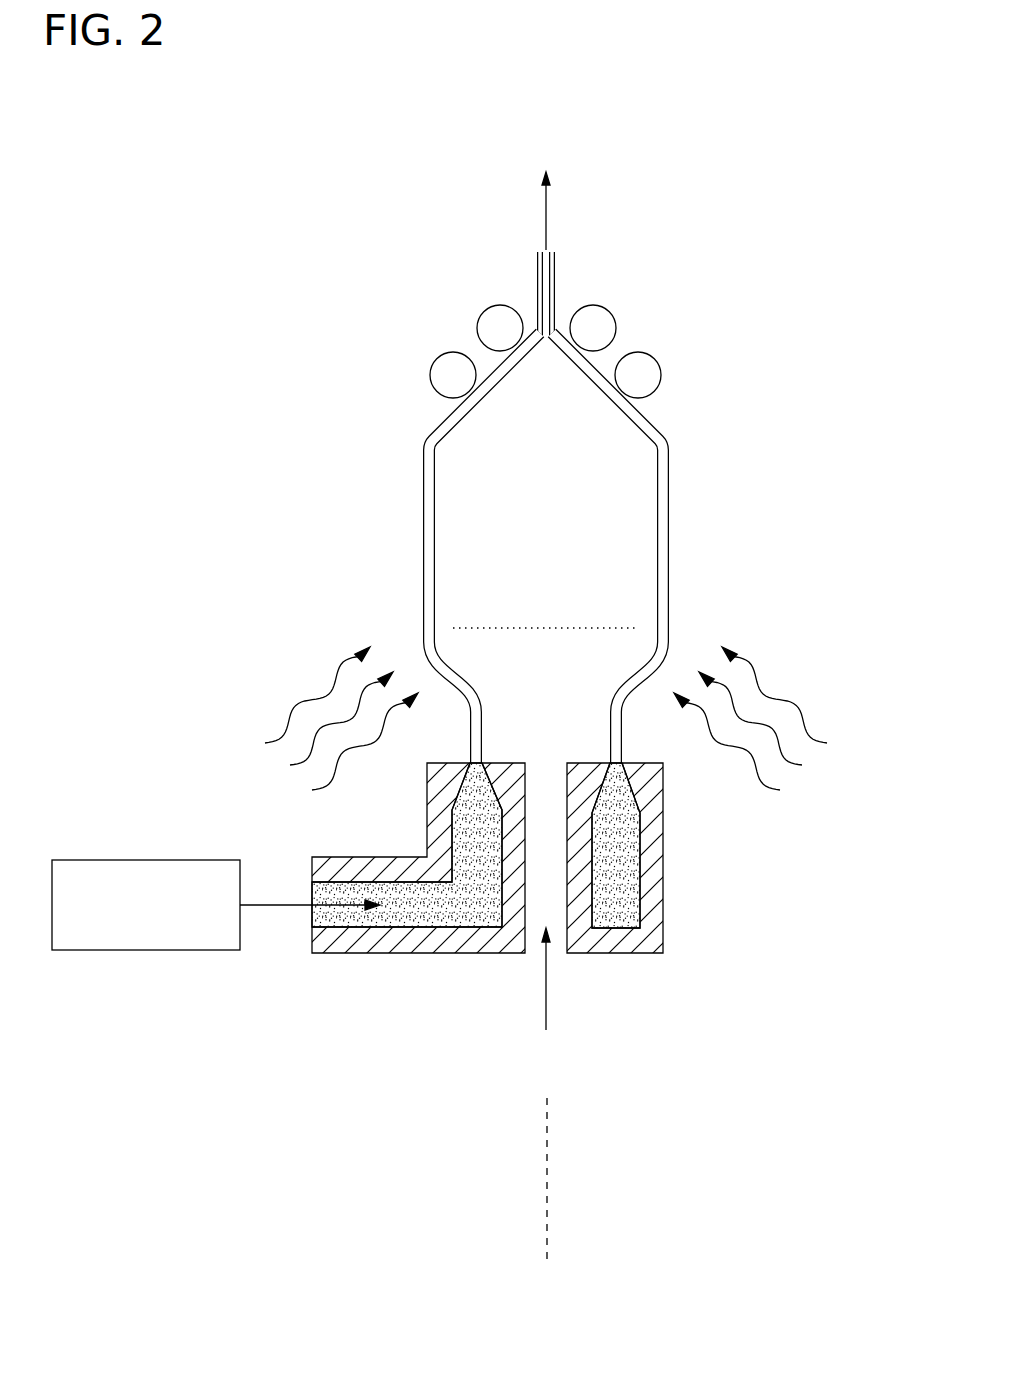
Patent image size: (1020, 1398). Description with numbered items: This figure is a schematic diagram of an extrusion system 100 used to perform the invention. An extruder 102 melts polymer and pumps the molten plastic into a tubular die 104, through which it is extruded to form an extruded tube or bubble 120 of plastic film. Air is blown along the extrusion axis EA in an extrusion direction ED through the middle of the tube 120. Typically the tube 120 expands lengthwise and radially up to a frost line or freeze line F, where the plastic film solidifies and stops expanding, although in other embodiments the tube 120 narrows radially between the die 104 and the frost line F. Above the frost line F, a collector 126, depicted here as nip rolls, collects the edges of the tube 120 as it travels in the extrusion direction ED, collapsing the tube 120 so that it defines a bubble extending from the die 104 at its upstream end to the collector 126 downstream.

The extrusion system 100 is at (334, 1098).
The extruder 102 is at (147, 950).
The tubular die 104 is at (663, 874).
The extruded tube or bubble 120 is at (668, 512).
The collector 126 is at (617, 322).
The extrusion direction ED is at (546, 219).
The frost line or freeze line F is at (617, 628).
The extrusion axis EA is at (547, 1210).